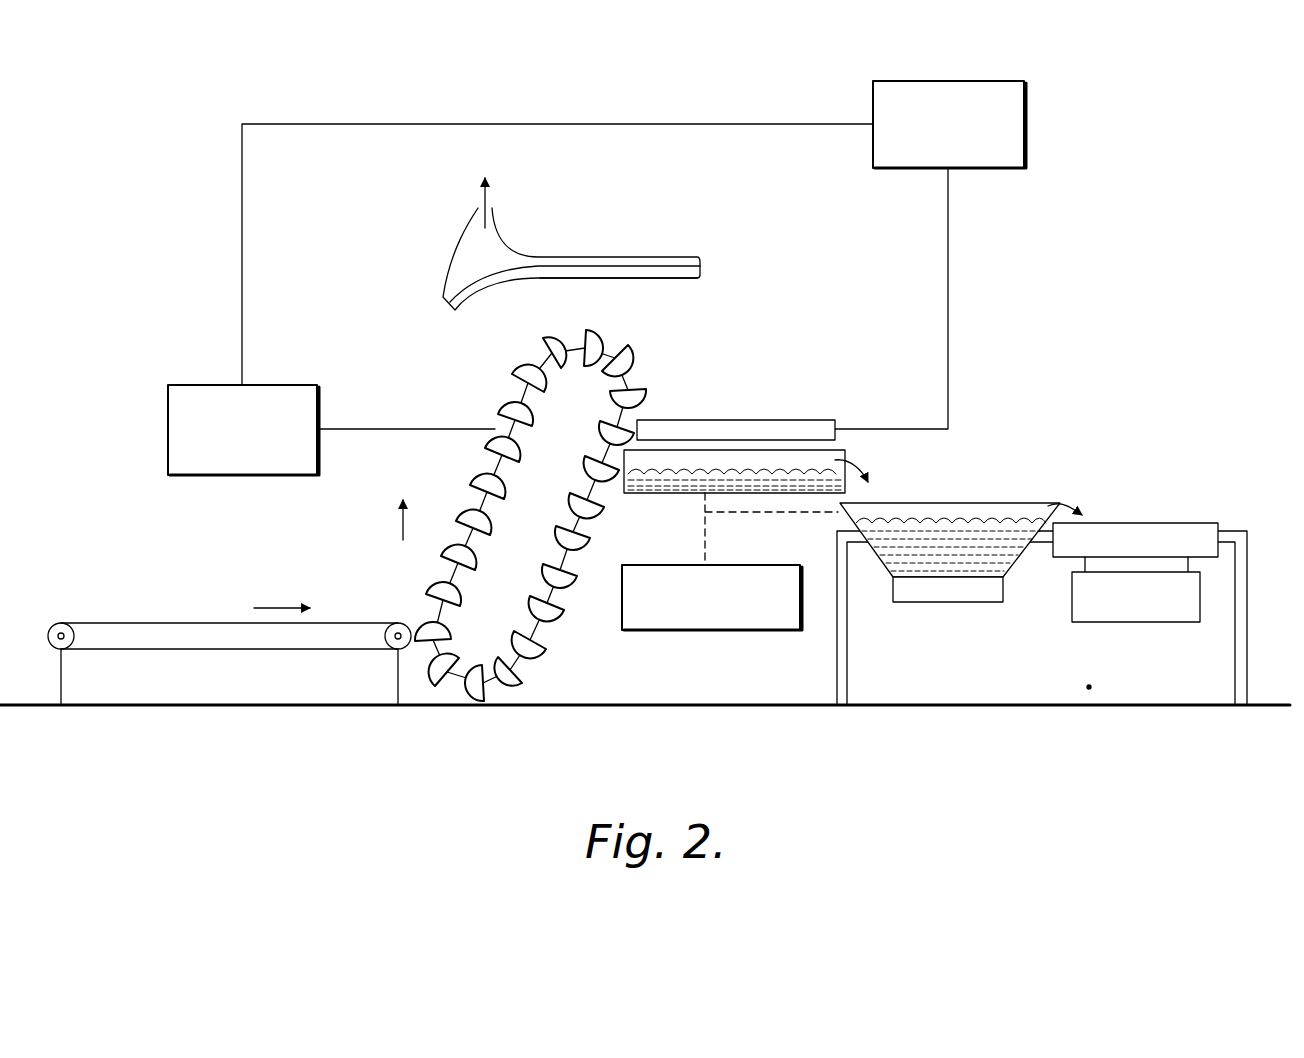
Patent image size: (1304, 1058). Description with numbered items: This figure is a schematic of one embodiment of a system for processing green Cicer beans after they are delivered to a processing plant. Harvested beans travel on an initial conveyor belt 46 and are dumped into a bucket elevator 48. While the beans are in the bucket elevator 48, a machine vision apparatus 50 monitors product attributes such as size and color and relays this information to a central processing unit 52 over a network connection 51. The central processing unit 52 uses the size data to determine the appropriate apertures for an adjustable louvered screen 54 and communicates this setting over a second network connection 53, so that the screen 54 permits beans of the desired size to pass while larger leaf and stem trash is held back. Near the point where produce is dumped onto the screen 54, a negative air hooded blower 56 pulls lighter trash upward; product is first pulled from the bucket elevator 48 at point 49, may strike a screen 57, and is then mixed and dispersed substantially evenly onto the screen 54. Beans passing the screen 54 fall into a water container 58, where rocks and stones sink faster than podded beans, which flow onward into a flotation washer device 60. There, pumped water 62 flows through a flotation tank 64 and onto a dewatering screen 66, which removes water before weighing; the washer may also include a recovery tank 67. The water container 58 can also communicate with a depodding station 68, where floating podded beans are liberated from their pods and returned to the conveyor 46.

The conveyor belt 46 is at (190, 632).
The bucket elevator 48 is at (562, 662).
The point 49 is at (573, 324).
The machine vision apparatus 50 is at (168, 400).
The network connection 51 is at (278, 118).
The central processing unit 52 is at (908, 168).
The network connection 53 is at (952, 292).
The screen 54 is at (718, 420).
The hooded blower 56 is at (632, 257).
The screen 57 is at (672, 280).
The water container 58 is at (682, 495).
The flotation washer device 60 is at (1022, 476).
The water 62 is at (946, 503).
The flotation tank 64 is at (945, 602).
The dewatering screen 66 is at (1150, 523).
The recovery tank 67 is at (1130, 622).
The depodding station 68 is at (707, 631).